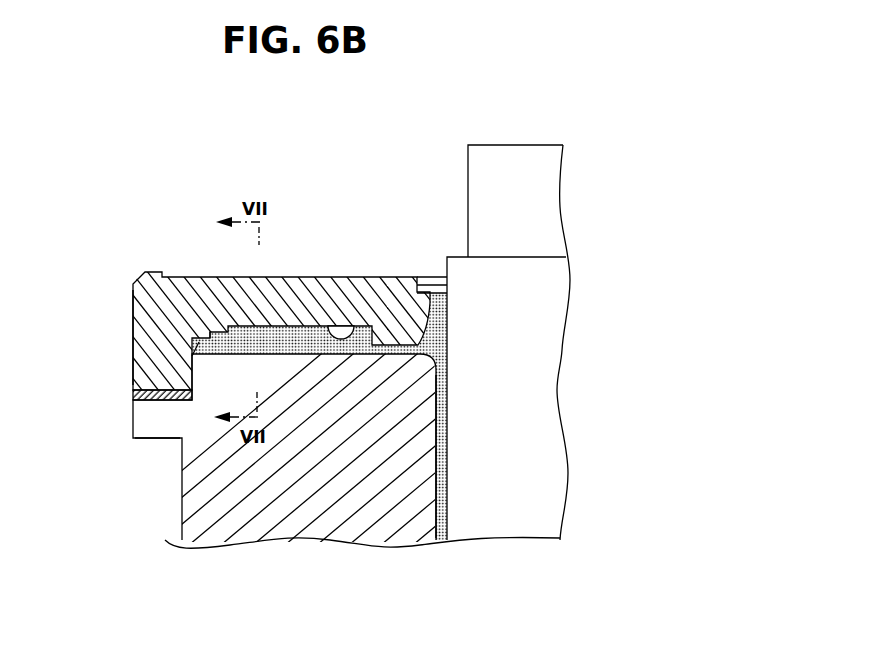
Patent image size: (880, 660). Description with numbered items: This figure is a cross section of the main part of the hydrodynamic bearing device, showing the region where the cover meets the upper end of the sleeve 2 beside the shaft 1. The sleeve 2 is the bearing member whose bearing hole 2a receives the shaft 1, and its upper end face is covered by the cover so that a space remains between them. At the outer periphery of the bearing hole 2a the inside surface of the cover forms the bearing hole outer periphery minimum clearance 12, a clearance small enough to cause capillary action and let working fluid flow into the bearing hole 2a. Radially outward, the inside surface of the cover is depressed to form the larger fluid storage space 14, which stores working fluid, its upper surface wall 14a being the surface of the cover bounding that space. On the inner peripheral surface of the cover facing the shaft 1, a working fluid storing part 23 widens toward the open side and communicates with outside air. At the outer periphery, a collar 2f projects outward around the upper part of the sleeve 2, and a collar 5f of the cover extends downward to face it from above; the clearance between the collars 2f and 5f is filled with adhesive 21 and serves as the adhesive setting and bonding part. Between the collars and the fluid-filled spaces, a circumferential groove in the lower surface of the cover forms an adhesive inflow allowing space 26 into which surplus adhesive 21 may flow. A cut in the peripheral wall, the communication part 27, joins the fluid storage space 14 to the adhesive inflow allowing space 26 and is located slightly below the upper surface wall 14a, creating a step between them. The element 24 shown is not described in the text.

The shaft 1 is at (483, 167).
The sleeve 2 is at (450, 490).
The bearing hole 2a is at (447, 535).
The collar 2f is at (147, 420).
The collar 5f is at (153, 375).
The bearing hole outer periphery minimum clearance 12 is at (409, 285).
The fluid storage space 14 is at (236, 355).
The upper surface wall 14a is at (348, 325).
The adhesive 21 is at (133, 393).
The working fluid storing part 23 is at (437, 265).
The cover member 24 is at (249, 286).
The adhesive inflow allowing space 26 is at (195, 346).
The communication part 27 is at (218, 326).